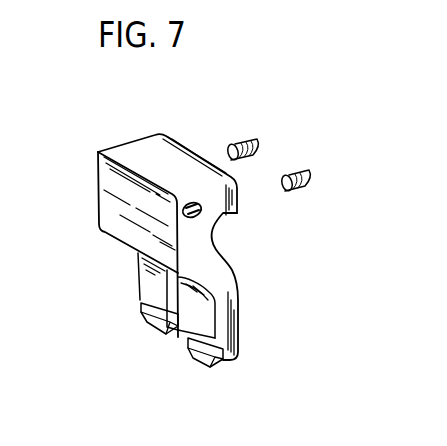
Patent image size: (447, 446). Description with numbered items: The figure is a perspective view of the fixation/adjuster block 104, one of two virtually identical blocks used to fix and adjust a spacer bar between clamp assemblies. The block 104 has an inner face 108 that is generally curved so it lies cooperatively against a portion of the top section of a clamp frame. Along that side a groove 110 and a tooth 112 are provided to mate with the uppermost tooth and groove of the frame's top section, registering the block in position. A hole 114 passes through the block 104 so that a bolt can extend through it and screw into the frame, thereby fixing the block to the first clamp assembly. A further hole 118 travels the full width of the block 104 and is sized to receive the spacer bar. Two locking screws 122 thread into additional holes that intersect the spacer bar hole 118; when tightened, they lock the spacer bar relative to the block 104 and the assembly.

The fixation/adjuster block 104 is at (98, 198).
The inner face 108 is at (163, 274).
The groove 110 is at (198, 347).
The tooth 112 is at (208, 358).
The hole 114 is at (177, 293).
The hole 118 is at (202, 209).
The locking screws 122 is at (293, 172).